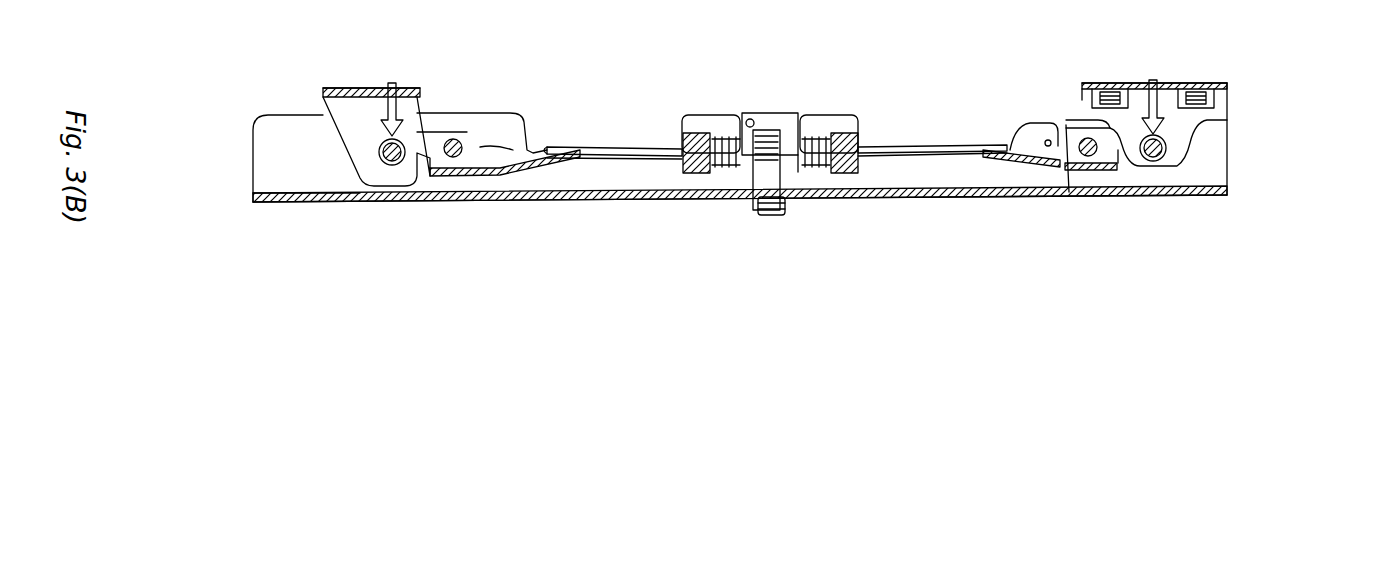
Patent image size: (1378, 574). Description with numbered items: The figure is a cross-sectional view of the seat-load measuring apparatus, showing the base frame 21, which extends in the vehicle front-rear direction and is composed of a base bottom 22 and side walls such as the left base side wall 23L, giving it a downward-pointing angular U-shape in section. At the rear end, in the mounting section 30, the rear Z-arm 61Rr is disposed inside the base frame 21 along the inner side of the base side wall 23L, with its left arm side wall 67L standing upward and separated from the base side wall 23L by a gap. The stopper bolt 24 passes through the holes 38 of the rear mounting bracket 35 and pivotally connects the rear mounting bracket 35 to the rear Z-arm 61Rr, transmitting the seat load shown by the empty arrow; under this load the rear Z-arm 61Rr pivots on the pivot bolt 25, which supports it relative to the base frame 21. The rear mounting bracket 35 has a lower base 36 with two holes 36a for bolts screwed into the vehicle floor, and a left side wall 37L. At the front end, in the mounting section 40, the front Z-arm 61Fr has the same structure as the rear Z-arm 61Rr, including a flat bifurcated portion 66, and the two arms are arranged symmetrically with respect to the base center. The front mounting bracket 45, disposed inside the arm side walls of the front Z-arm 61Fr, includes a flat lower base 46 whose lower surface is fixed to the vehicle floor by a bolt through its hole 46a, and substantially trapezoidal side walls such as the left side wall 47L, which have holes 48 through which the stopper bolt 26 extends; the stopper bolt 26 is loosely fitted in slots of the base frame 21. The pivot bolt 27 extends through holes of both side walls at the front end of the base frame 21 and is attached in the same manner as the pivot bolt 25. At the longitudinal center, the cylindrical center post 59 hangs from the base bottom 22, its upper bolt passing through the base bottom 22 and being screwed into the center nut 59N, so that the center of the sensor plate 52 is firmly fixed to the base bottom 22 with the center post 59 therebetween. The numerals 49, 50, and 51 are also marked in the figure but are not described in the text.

The base frame 21 is at (626, 203).
The base bottom 22 is at (1228, 193).
The left base side wall 23L is at (1220, 172).
The stopper bolt 24 is at (1145, 162).
The pivot bolt 25 is at (1086, 162).
The stopper bolt 26 is at (398, 163).
The pivot bolt 27 is at (472, 128).
The mounting section 30 is at (1213, 308).
The rear mounting bracket 35 is at (1320, 40).
The lower base of rear mounting bracket 36 is at (1228, 88).
The holes 36a is at (1197, 82).
The left side wall of rear mounting bracket 37L is at (1228, 118).
The holes 38 is at (1170, 168).
The mounting section 40 is at (525, 308).
The front mounting bracket 45 is at (195, 88).
The lower base 46 is at (323, 92).
The hole 46a is at (350, 90).
The left side wall of front mounting bracket 47L is at (345, 148).
The holes 48 is at (383, 165).
The front bracket base 49 is at (320, 182).
The coupling portion 50 is at (868, 308).
The coupling member 51 is at (806, 180).
The sensor plate 52 is at (838, 192).
The center post 59 is at (747, 184).
The center nut 59N is at (753, 213).
The front Z-arm 61Fr is at (549, 141).
The rear Z-arm 61Rr is at (1002, 142).
The bifurcated portion 66 is at (627, 157).
The left arm side wall 67L is at (1048, 146).